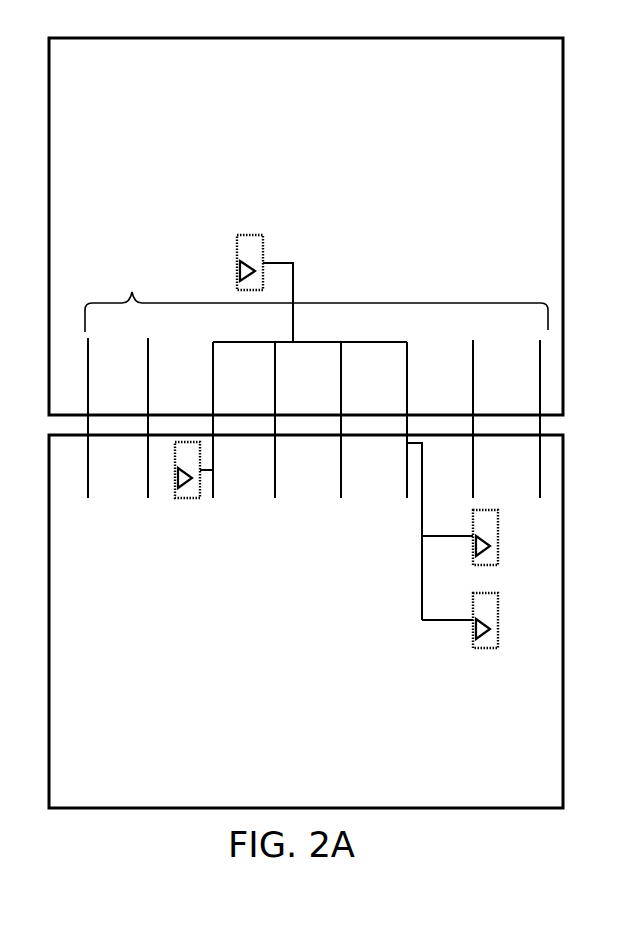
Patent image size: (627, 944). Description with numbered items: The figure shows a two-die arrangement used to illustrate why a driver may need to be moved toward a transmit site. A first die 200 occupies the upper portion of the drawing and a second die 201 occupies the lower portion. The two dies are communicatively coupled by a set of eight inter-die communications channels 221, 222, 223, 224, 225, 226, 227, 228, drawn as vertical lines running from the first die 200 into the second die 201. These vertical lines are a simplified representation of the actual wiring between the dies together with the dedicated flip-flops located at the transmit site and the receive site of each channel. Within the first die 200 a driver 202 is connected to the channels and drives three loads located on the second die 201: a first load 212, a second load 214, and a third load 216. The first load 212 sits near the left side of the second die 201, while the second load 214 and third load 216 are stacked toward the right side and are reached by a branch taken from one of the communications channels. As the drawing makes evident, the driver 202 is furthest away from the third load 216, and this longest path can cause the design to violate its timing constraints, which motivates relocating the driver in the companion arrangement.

The first die 200 is at (306, 226).
The second die 201 is at (306, 621).
The driver 202 is at (263, 247).
The load 212 is at (176, 490).
The load 214 is at (495, 563).
The load 216 is at (490, 649).
The communications channel 221 is at (73, 418).
The communications channel 222 is at (133, 418).
The communications channel 223 is at (198, 420).
The communications channel 224 is at (260, 420).
The communications channel 225 is at (326, 420).
The communications channel 226 is at (400, 481).
The communications channel 227 is at (458, 419).
The communications channel 228 is at (525, 419).